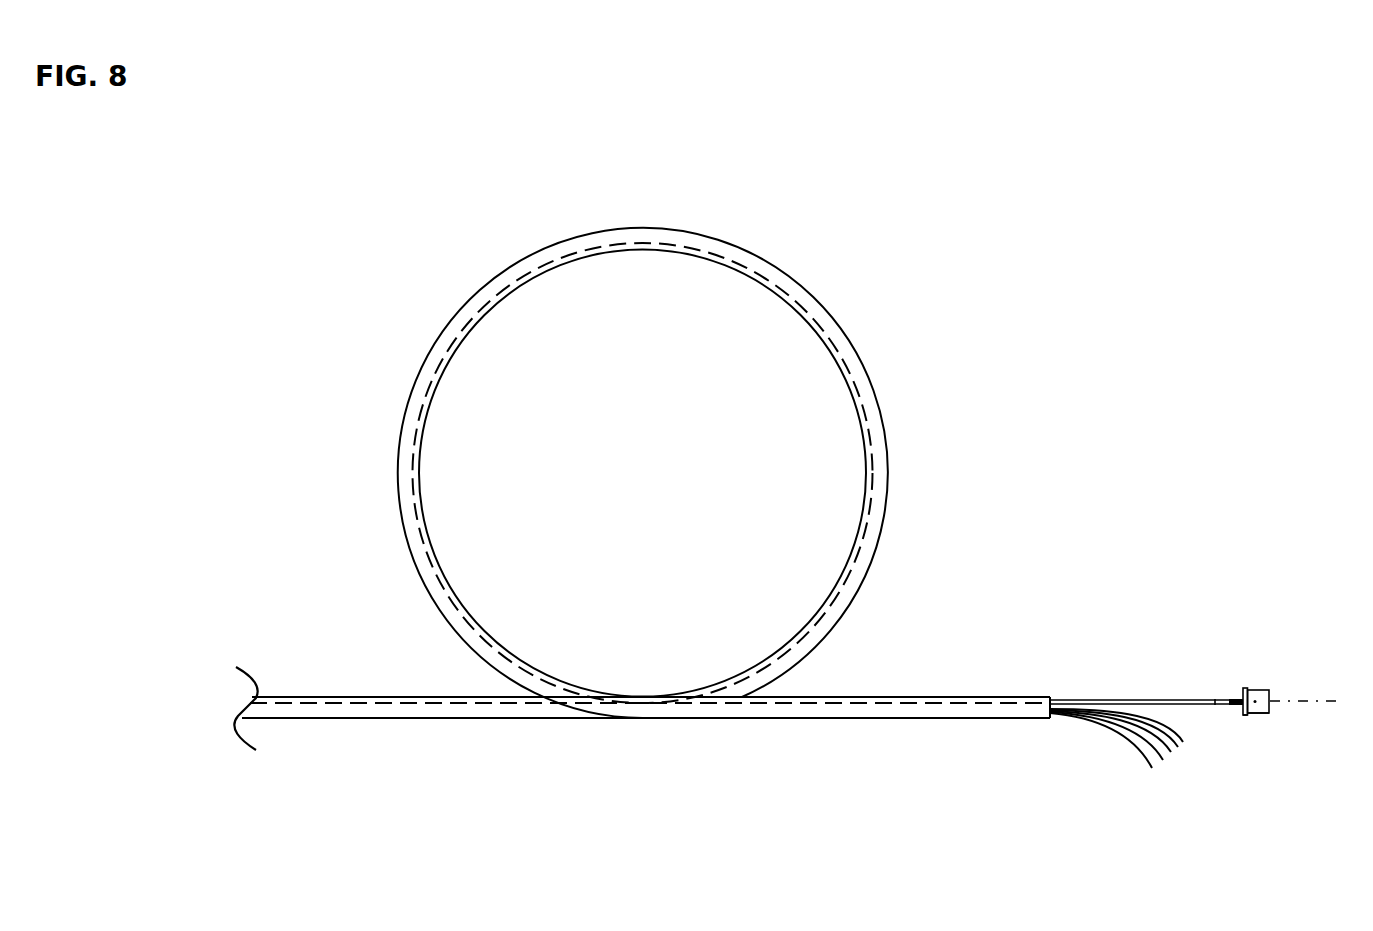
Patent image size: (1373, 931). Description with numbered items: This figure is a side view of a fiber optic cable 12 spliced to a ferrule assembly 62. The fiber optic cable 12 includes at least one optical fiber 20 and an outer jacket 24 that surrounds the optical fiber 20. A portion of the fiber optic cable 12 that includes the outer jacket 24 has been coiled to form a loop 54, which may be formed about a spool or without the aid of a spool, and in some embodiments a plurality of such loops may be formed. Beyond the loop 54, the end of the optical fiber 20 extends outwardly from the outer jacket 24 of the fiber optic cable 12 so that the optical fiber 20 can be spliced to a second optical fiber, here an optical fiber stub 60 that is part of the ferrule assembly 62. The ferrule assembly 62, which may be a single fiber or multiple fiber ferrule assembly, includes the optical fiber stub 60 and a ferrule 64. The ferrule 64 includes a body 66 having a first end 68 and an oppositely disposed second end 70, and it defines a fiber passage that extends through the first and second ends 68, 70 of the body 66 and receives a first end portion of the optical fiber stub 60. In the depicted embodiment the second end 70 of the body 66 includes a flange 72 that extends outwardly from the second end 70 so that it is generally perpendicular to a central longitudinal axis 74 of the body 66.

The fiber optic cable 12 is at (430, 255).
The loop 54 is at (866, 362).
The outer jacket 24 is at (840, 718).
The optical fiber 20 is at (1090, 698).
The optical fiber stub 60 is at (1223, 698).
The ferrule assembly 62 is at (1226, 648).
The ferrule 64 is at (1278, 667).
The body 66 is at (1258, 676).
The first end 68 is at (1263, 715).
The second end 70 is at (1245, 717).
The flange 72 is at (1247, 718).
The central longitudinal axis 74 is at (1333, 702).